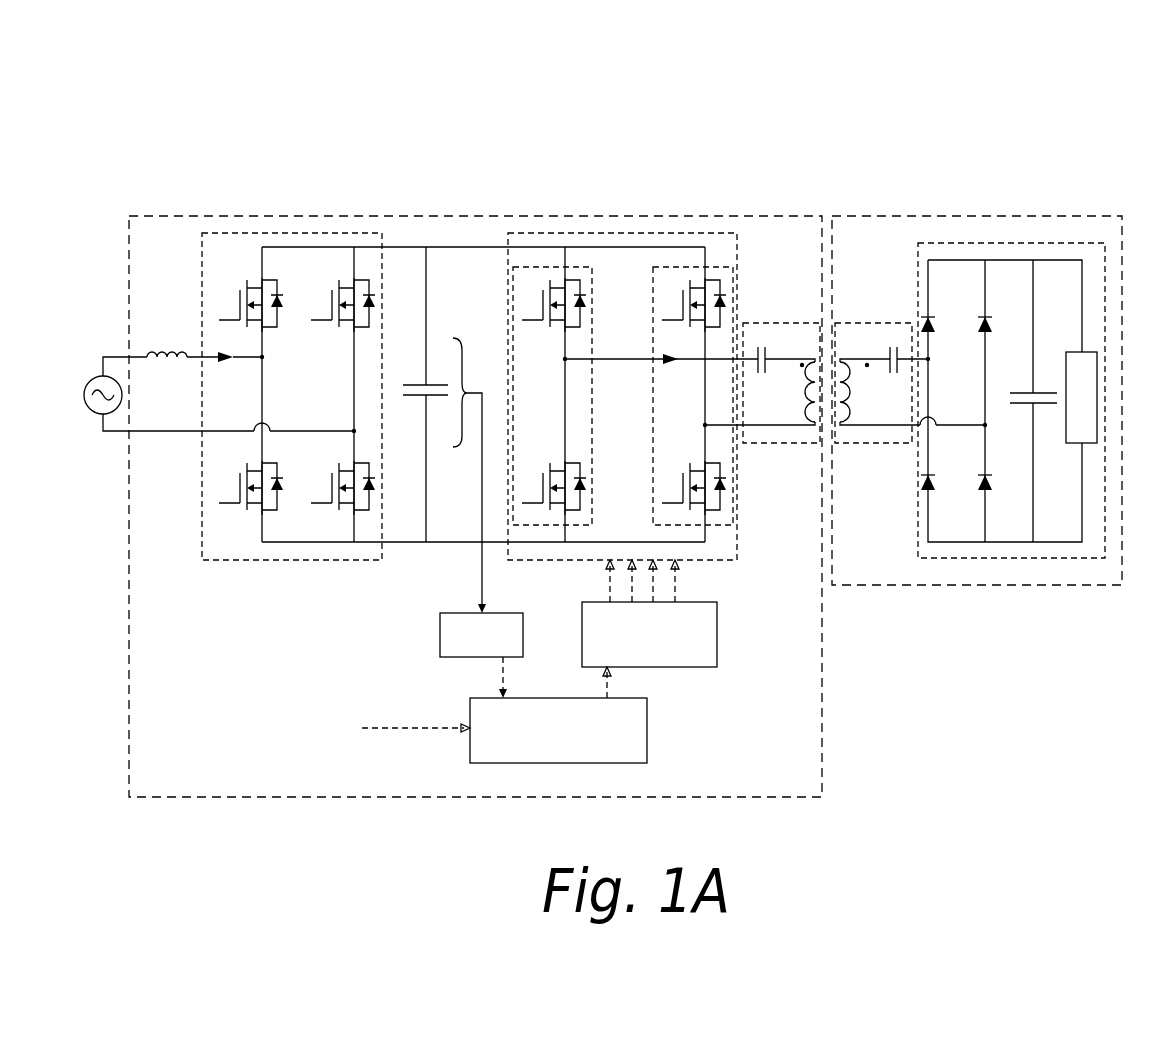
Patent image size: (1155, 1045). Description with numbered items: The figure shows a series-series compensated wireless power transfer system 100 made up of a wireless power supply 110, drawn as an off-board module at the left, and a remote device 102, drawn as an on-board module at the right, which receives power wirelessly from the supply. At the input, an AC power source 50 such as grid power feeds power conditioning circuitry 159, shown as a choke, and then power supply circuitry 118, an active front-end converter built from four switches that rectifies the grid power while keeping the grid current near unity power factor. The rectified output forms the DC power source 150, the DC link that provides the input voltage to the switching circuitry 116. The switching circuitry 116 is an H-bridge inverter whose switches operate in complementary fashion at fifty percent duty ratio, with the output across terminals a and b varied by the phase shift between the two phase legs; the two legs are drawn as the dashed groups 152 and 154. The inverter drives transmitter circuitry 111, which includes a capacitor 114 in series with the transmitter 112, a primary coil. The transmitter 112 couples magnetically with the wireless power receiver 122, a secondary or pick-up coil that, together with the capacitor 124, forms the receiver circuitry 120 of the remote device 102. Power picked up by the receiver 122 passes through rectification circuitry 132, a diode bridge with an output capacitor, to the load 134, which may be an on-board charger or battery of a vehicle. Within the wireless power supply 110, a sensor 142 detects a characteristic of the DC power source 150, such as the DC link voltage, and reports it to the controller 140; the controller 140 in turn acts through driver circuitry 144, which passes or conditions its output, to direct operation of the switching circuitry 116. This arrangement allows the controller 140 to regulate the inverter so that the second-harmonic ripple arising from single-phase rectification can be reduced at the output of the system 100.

The wireless power transfer system 100 is at (879, 124).
The wireless power supply 110 is at (388, 216).
The power supply circuitry 118 is at (284, 233).
The DC power source 150 is at (455, 247).
The switching circuitry 116 is at (560, 233).
The first inverter leg (S5, S6) 152 is at (592, 337).
The second inverter leg / DC link voltage sensor 154 is at (437, 398).
The power conditioning circuitry 159 is at (188, 350).
The AC power source 50 is at (100, 416).
The transmitter circuitry 111 is at (788, 443).
The transmitter 112 is at (807, 356).
The primary compensation capacitor Cp 114 is at (755, 374).
The receiver circuitry 120 is at (868, 443).
The wireless power receiver 122 is at (862, 392).
The capacitor 124 is at (888, 346).
The remote device 102 is at (1005, 585).
The rectification circuitry 132 is at (1027, 243).
The load 134 is at (1072, 352).
The sensor 142 is at (440, 637).
The driver circuitry 144 is at (693, 667).
The controller 140 is at (647, 735).